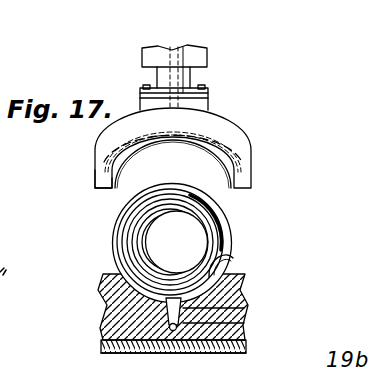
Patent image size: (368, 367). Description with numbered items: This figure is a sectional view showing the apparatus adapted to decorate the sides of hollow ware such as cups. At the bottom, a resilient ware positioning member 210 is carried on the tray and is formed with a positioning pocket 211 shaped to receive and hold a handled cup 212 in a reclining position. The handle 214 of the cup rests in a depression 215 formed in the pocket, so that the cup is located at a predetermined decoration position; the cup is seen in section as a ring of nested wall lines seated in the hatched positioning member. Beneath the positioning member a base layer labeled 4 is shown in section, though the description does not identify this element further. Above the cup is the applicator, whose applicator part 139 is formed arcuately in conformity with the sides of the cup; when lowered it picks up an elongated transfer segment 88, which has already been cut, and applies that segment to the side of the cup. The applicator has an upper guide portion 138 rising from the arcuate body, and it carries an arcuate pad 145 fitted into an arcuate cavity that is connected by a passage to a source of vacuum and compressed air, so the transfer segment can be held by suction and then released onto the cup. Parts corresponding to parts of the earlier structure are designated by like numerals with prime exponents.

The upper guide portion 138 is at (208, 53).
The applicator part 139 is at (237, 133).
The transfer segment 88 is at (127, 148).
The arcuate pad 145 is at (105, 168).
The handled cup 212 is at (227, 237).
The positioning pocket 211 is at (221, 253).
The resilient ware positioning member 210 is at (246, 288).
The depression 215 is at (243, 308).
The handle 214 is at (238, 325).
The base 4 is at (100, 347).